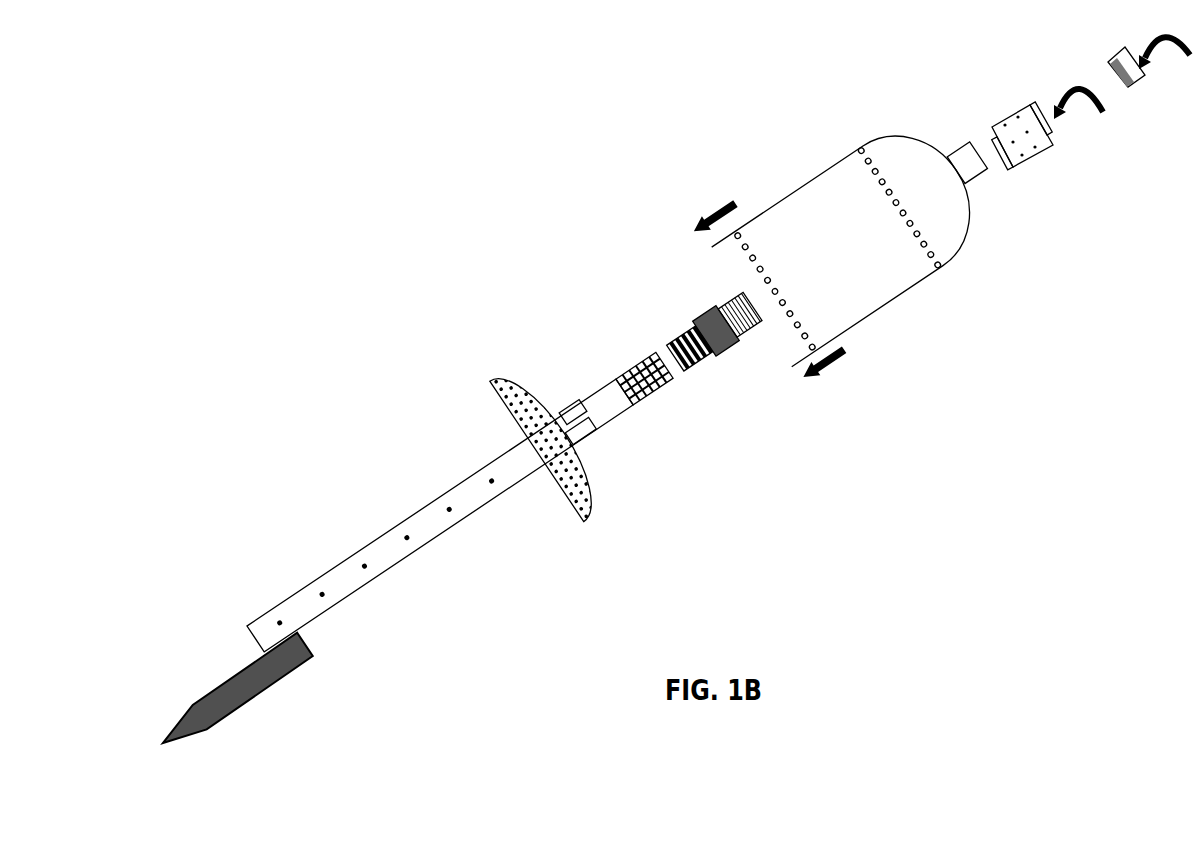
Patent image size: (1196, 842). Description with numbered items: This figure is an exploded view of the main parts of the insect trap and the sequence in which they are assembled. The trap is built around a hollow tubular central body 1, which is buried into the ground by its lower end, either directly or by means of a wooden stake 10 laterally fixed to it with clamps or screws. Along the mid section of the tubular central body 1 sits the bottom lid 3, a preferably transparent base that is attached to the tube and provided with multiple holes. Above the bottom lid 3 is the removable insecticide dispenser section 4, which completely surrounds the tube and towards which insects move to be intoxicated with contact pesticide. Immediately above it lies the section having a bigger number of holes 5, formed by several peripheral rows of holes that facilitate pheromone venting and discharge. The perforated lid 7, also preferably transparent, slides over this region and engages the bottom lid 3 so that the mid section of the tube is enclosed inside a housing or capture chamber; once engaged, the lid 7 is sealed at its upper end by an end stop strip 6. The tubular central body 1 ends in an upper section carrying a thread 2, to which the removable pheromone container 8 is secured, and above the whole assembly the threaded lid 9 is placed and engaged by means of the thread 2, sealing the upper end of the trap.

The tubular central body 1 is at (460, 498).
The thread 2 is at (722, 305).
The bottom lid 3 is at (590, 490).
The insecticide dispenser section 4 is at (627, 370).
The section having a bigger number of holes 5 is at (698, 367).
The end stop strip 6 is at (733, 348).
The perforated lid 7 is at (885, 273).
The pheromone container 8 is at (1032, 148).
The threaded lid 9 is at (1127, 78).
The wooden stake 10 is at (298, 667).